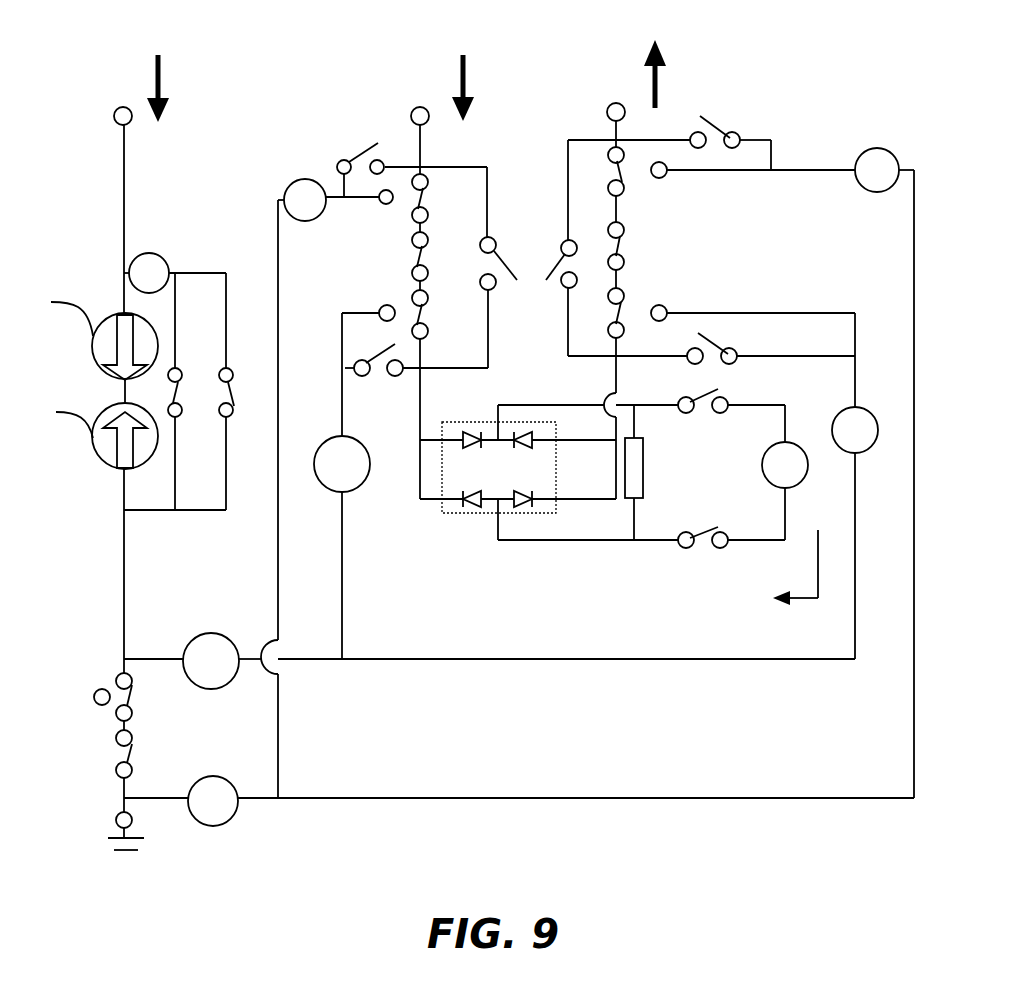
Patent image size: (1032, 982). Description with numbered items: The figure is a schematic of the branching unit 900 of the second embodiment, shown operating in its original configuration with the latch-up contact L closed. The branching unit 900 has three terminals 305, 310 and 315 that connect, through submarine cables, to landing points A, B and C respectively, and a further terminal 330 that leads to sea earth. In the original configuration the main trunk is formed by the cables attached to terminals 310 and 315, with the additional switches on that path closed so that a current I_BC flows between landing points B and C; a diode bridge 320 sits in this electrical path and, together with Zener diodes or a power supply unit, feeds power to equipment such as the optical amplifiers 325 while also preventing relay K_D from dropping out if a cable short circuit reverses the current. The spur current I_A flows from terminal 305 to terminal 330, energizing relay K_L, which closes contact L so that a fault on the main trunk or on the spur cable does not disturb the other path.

The terminal 305 is at (113, 111).
The terminal 310 is at (410, 110).
The terminal 315 is at (608, 106).
The diode bridge 320 is at (459, 514).
The optical amplifiers 325 is at (644, 462).
The terminal 330 is at (114, 815).
The branching unit 900 is at (830, 871).